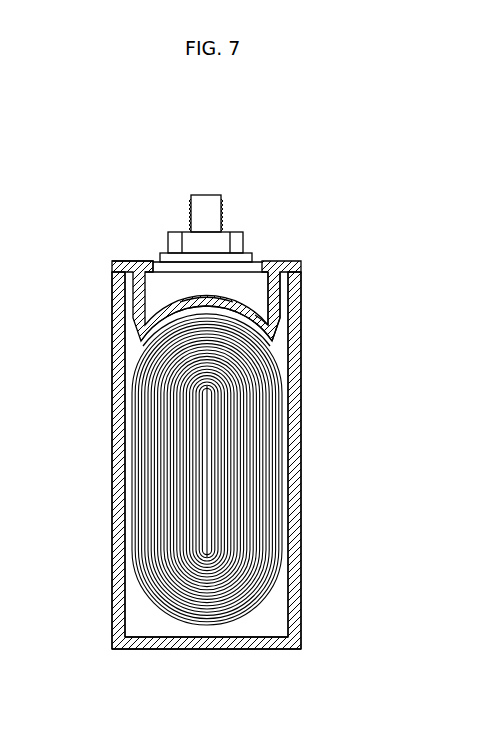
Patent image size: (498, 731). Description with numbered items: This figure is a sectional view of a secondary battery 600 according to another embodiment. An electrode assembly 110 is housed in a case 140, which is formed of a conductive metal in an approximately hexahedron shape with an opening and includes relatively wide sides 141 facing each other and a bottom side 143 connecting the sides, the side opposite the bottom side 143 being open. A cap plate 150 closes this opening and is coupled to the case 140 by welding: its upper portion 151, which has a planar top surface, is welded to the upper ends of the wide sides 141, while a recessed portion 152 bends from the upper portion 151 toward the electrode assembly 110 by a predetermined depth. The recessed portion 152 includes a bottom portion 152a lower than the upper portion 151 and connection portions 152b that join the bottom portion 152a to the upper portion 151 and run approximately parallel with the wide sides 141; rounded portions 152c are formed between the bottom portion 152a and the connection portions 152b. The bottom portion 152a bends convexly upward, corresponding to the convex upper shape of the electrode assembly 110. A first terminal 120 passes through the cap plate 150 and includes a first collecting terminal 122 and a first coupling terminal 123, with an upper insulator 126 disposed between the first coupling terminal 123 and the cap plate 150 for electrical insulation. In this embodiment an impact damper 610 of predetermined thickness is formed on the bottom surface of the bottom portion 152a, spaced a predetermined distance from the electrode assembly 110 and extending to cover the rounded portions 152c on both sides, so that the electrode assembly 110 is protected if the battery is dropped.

The secondary battery 600 is at (315, 162).
The electrode assembly 110 is at (186, 630).
The first terminal 120 is at (184, 196).
The first collecting terminal 122 is at (210, 199).
The first coupling terminal 123 is at (174, 234).
The upper insulator 126 is at (164, 254).
The case 140 is at (217, 487).
The wide sides 141 is at (120, 413).
The bottom side 143 is at (237, 650).
The cap plate 150 is at (219, 278).
The upper portion 151 is at (156, 276).
The recessed portion 152 is at (213, 269).
The bottom portion 152a is at (228, 297).
The connection portions 152b is at (264, 286).
The rounded portions 152c is at (265, 327).
The impact damper 610 is at (268, 334).